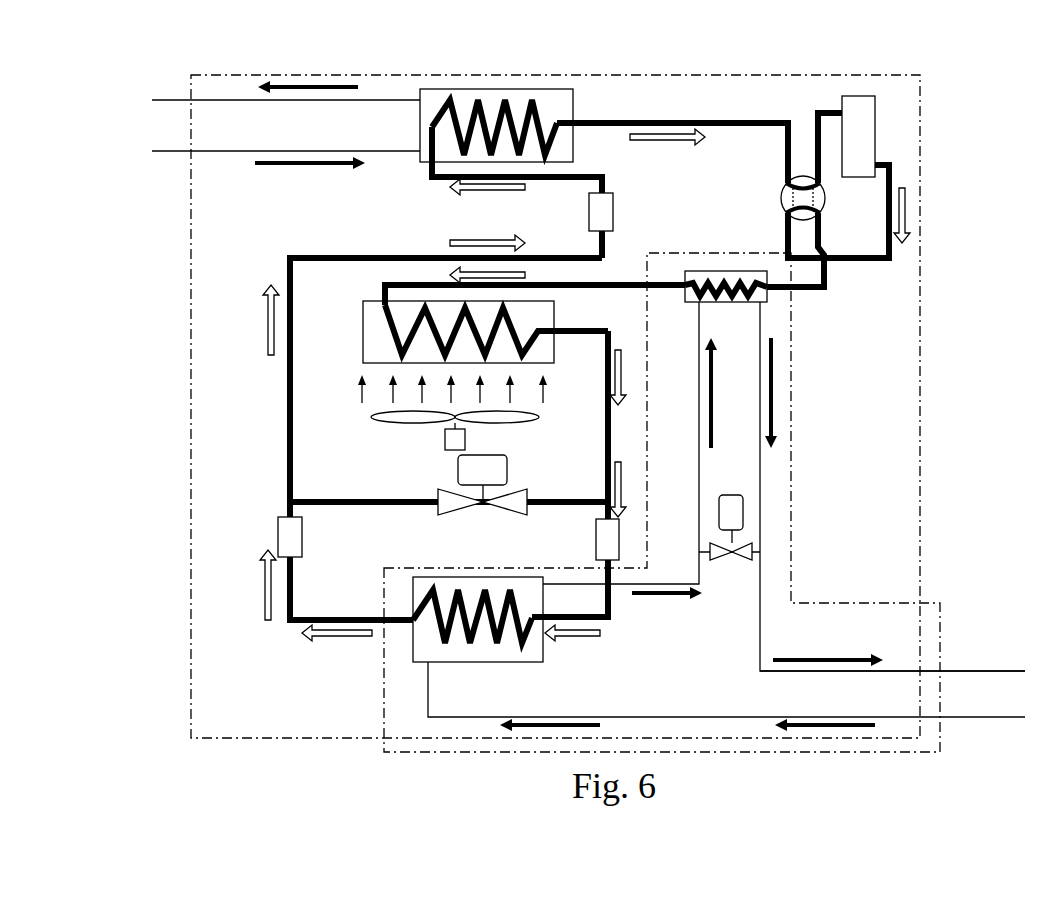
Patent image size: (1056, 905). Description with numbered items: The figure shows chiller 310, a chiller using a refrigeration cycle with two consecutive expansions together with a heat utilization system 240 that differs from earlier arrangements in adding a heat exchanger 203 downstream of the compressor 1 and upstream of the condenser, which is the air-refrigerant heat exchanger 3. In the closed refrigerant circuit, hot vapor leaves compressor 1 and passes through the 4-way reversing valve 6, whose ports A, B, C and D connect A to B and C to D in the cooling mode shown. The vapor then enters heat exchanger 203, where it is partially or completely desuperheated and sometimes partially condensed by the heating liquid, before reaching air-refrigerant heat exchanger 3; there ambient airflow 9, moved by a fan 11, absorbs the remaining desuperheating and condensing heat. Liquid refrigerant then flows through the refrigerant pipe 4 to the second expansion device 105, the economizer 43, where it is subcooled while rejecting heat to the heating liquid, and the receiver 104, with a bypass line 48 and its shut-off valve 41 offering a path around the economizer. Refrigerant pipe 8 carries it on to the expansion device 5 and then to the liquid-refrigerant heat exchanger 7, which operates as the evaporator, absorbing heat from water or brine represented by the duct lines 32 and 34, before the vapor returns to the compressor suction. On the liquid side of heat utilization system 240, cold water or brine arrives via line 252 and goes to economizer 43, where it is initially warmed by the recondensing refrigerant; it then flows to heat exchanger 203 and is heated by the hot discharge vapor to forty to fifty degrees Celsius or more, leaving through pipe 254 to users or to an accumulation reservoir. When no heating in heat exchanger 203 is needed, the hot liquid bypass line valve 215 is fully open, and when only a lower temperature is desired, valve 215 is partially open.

The compressor 1 is at (858, 145).
The air-refrigerant heat exchanger 3 is at (380, 347).
The refrigerant pipe 4 is at (605, 470).
The expansion device 5 is at (600, 213).
The 4-way reversing valve 6 is at (826, 196).
The liquid-refrigerant heat exchanger 7 is at (427, 105).
The refrigerant pipe 8 is at (312, 257).
The airflow 9 is at (500, 378).
The fan 11 is at (413, 418).
The air inlet duct 32 is at (240, 152).
The air outlet duct 34 is at (320, 100).
The shut-off valve 41 is at (500, 502).
The economizer 43 is at (533, 642).
The bypass line 48 is at (415, 505).
The receiver 104 is at (290, 532).
The second expansion device 105 is at (608, 545).
The additional heat exchanger 203 is at (767, 302).
The hot liquid bypass line valve 215 is at (752, 552).
The heat utilization system 240 is at (935, 630).
The line 252 is at (683, 716).
The pipe 254 is at (888, 671).
The chiller 310 is at (921, 305).